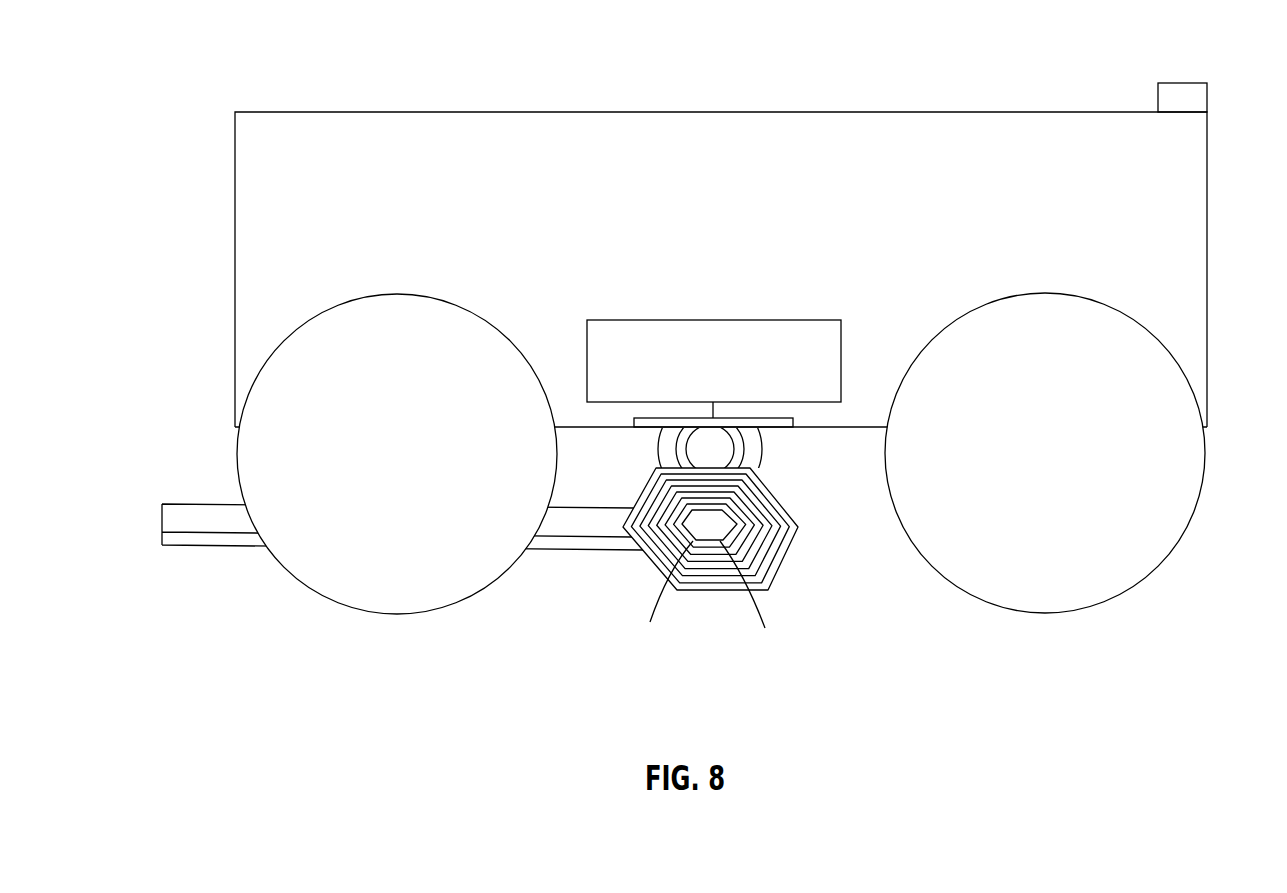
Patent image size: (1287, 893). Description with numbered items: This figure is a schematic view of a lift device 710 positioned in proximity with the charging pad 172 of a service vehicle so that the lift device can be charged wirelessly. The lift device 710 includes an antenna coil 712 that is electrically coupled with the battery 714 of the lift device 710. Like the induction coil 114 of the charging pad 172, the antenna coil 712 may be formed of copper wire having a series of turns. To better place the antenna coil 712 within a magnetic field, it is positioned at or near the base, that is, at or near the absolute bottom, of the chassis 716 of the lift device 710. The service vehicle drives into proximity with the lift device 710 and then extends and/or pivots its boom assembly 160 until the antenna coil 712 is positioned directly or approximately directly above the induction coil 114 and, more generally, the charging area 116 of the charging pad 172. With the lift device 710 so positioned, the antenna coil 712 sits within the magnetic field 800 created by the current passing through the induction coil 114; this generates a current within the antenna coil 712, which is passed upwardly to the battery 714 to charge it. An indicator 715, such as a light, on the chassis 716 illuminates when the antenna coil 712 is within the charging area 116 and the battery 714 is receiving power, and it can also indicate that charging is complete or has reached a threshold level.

The lift device 710 is at (703, 332).
The antenna coil 712 is at (783, 428).
The battery 714 is at (733, 320).
The indicator 715 is at (1178, 83).
The chassis 716 is at (256, 243).
The boom assembly 160 is at (217, 552).
The magnetic field 800 is at (652, 451).
The charging pad 172 is at (798, 575).
The charging area 116 is at (663, 601).
The induction coil 114 is at (752, 601).